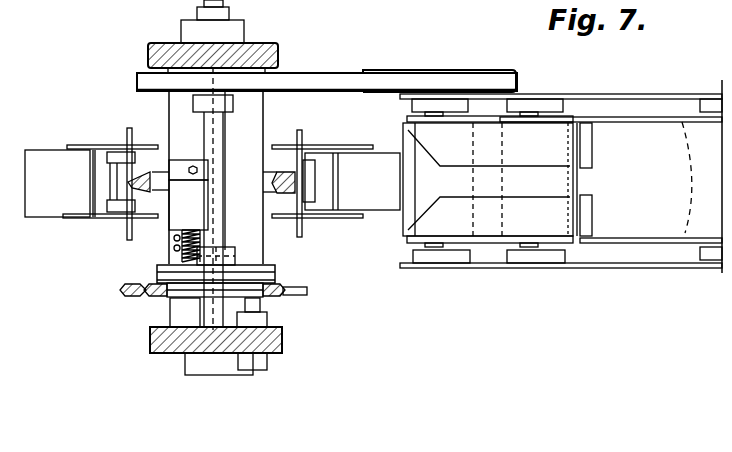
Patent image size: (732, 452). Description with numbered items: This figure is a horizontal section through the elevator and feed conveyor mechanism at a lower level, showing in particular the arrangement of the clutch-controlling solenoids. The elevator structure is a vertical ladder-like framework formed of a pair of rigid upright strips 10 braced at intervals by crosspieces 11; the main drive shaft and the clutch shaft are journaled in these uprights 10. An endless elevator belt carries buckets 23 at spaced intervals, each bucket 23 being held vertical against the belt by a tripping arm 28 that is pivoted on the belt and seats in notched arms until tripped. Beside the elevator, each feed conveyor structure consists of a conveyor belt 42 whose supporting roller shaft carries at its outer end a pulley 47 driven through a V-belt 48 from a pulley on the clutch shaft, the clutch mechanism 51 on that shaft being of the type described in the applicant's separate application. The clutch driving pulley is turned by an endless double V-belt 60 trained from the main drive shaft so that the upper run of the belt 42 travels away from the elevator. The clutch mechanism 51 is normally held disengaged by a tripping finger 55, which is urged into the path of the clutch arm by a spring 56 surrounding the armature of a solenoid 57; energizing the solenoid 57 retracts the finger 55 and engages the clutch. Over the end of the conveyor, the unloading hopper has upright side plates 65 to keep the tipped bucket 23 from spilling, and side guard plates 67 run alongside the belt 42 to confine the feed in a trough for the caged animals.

The upright strips 10 is at (152, 60).
The crosspieces 11 is at (253, 128).
The buckets 23 is at (37, 158).
The tripping arm 28 is at (127, 138).
The conveyor belt 42 is at (650, 128).
The pulley 47 is at (425, 72).
The V-belt 48 is at (318, 80).
The bracket 51 is at (273, 265).
The tripping finger 55 is at (182, 263).
The spring 56 is at (172, 120).
The solenoid 57 is at (183, 211).
The double V-belt 60 is at (307, 287).
The side plates 65 is at (582, 143).
The side guard plates 67 is at (605, 93).